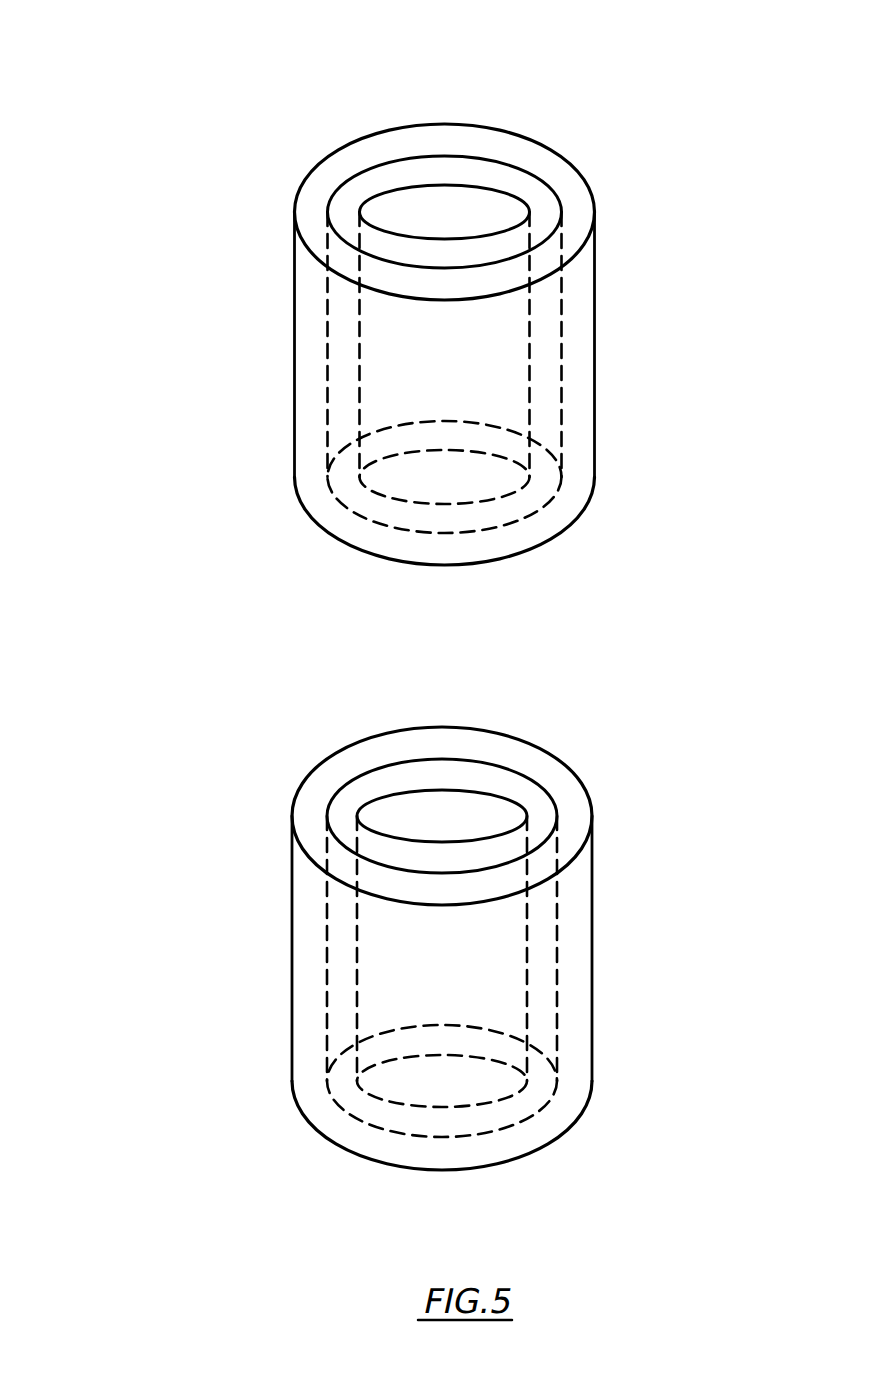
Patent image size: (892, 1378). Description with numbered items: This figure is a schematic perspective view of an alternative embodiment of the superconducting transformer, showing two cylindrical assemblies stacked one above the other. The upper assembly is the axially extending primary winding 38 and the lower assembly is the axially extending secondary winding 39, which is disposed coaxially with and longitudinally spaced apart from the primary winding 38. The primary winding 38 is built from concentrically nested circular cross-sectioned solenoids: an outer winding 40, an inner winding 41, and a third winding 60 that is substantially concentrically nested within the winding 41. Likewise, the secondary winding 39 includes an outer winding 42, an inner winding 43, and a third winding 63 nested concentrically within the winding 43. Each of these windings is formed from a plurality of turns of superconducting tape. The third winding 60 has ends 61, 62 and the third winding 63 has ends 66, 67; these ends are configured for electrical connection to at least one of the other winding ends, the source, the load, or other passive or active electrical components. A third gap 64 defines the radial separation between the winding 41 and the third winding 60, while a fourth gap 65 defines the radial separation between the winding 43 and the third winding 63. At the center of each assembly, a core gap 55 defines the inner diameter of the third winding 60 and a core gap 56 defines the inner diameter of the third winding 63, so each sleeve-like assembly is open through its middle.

The primary winding 38 is at (414, 291).
The secondary winding 39 is at (411, 894).
The winding 40 is at (520, 300).
The winding 41 is at (518, 184).
The winding 42 is at (517, 904).
The winding 43 is at (517, 788).
The core gap 55 is at (445, 128).
The core gap 56 is at (442, 730).
The third winding 60 is at (404, 267).
The end 61 is at (368, 327).
The end 62 is at (386, 521).
The third winding 63 is at (401, 871).
The third gap 64 is at (553, 247).
The fourth gap 65 is at (547, 851).
The end 66 is at (364, 932).
The end 67 is at (386, 1125).